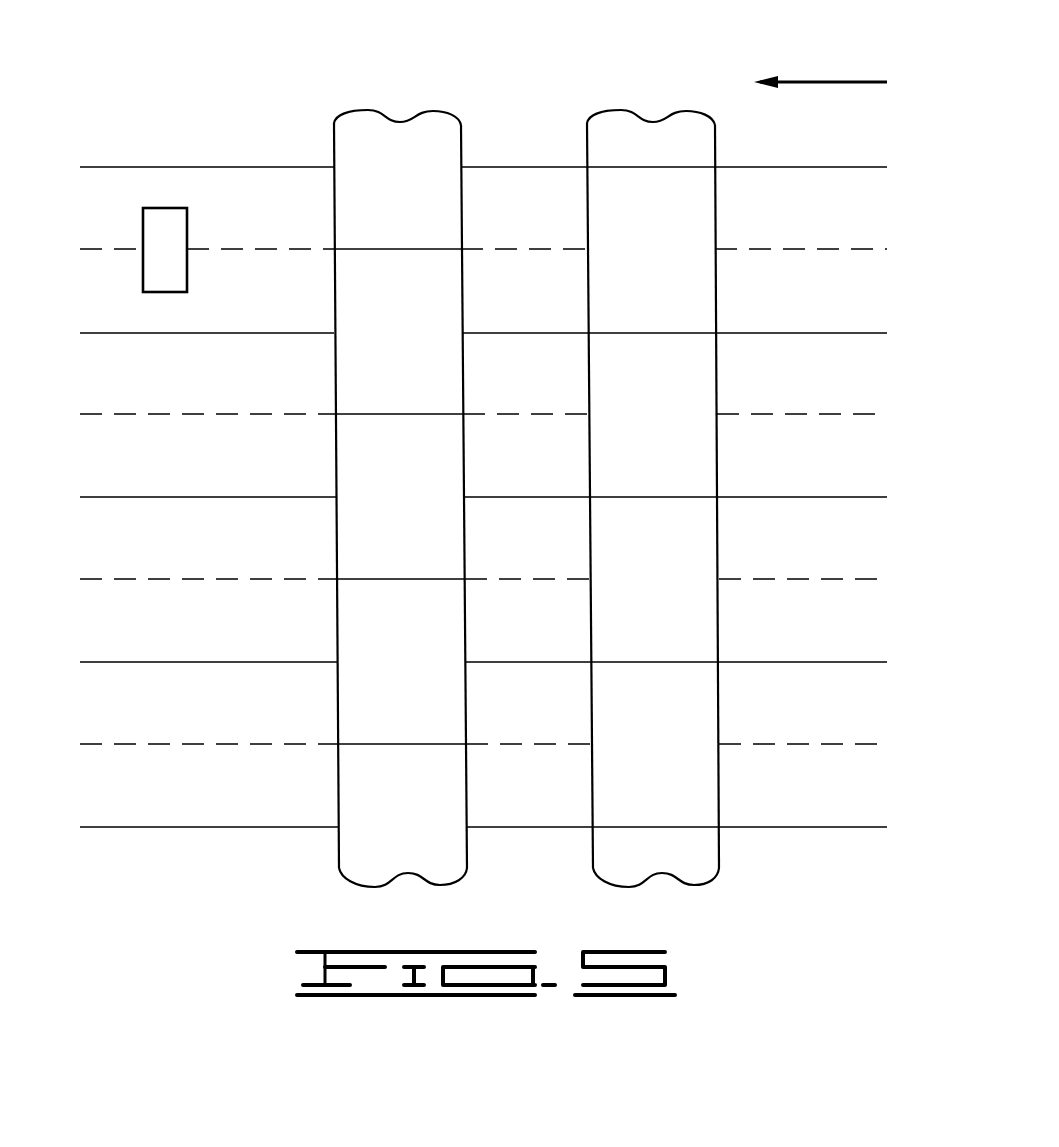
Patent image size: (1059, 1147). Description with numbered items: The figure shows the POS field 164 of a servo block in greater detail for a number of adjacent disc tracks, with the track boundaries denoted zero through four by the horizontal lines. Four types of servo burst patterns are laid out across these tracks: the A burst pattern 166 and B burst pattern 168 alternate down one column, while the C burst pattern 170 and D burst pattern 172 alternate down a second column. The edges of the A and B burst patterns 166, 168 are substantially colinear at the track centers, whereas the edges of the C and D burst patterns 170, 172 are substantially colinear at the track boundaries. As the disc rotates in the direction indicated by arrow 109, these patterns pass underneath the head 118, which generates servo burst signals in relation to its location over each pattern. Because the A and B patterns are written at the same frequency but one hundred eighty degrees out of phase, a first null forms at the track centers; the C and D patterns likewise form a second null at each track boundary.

The POS field 164 is at (288, 49).
The arrow 109 is at (832, 82).
The head 118 is at (156, 222).
The A burst pattern 166 is at (445, 150).
The B burst pattern 168 is at (447, 313).
The C burst pattern 170 is at (700, 230).
The D burst pattern 172 is at (703, 397).